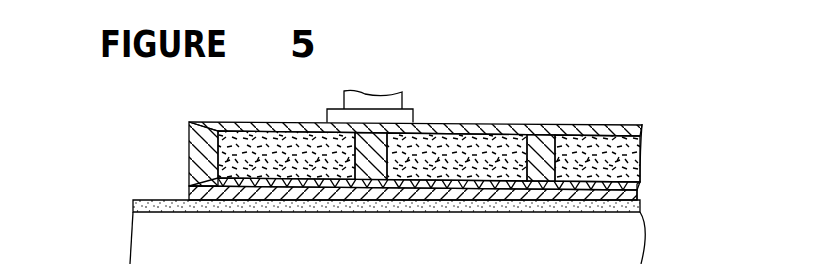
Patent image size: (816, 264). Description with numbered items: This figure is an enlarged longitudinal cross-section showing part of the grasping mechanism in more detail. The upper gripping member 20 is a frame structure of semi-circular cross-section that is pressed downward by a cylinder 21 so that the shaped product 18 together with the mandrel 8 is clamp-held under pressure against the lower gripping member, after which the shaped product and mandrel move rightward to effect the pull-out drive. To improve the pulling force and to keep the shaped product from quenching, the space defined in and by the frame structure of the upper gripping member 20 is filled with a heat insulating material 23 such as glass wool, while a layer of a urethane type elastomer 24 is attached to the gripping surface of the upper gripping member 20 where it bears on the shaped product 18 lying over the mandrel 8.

The mandrel 8 is at (643, 222).
The shaped product 18 is at (637, 197).
The upper gripping member 20 is at (213, 121).
The cylinder 21 is at (403, 102).
The heat insulating material 23 is at (468, 158).
The layer of a urethane type elastomer 24 is at (188, 191).